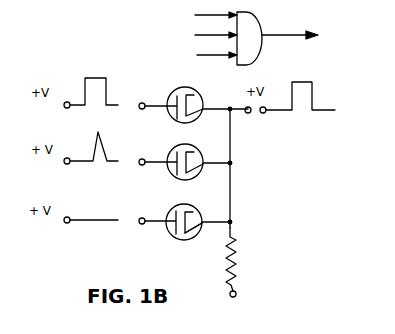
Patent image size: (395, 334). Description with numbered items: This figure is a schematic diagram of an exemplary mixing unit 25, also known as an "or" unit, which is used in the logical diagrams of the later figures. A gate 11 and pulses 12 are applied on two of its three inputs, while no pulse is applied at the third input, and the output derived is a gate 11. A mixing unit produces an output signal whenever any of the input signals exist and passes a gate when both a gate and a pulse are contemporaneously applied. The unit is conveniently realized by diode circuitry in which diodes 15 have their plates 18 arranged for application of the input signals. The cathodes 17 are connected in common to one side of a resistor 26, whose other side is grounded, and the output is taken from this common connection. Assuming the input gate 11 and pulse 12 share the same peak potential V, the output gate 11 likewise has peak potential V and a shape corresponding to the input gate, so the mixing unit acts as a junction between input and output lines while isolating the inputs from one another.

The gate 11 is at (94, 78).
The pulses 12 is at (92, 146).
The diodes 15 is at (181, 90).
The cathodes 17 is at (192, 227).
The plates 18 is at (171, 101).
The mixing unit 25 is at (260, 32).
The resistor 26 is at (236, 267).